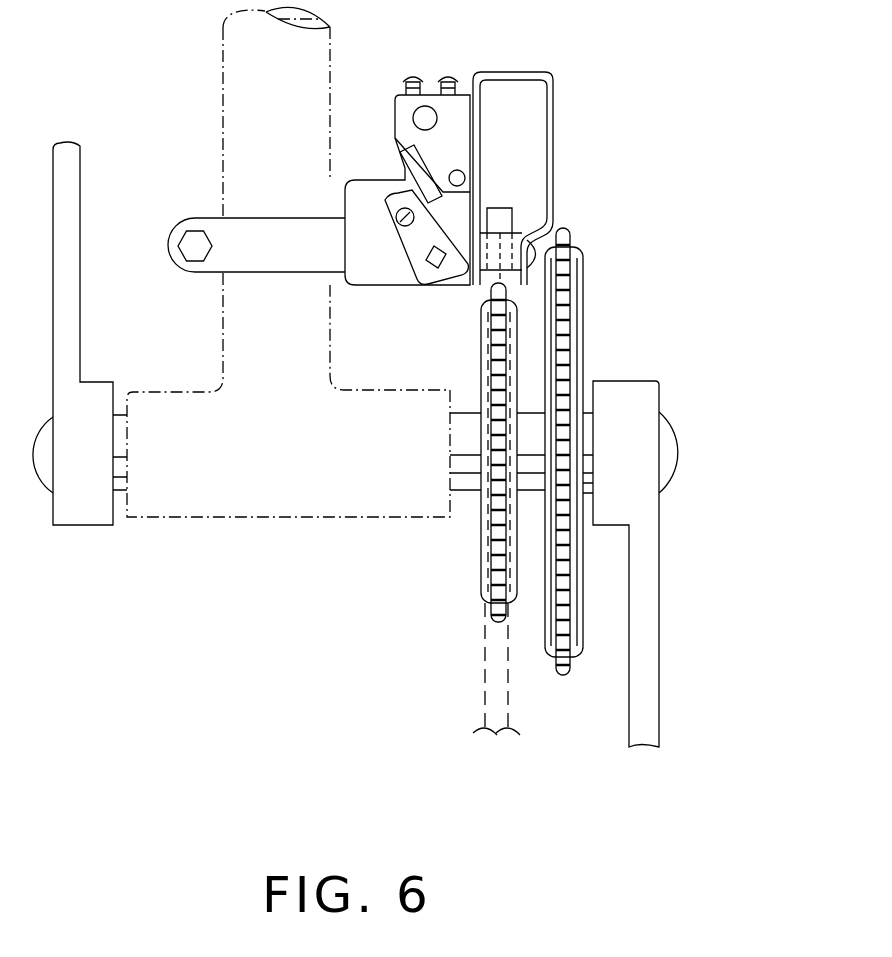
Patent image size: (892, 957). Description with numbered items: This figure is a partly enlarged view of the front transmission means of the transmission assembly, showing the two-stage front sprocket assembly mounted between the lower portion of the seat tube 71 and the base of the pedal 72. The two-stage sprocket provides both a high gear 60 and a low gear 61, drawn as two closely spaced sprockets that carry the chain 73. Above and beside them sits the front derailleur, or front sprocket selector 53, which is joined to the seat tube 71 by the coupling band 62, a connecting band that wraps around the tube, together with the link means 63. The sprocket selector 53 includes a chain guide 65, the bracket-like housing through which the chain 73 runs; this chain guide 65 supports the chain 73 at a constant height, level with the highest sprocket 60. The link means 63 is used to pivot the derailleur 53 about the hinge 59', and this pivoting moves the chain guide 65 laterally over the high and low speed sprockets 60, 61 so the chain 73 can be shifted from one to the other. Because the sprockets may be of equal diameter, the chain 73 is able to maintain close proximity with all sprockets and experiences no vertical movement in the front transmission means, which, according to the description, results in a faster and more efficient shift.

The front sprocket selector 53 is at (562, 143).
The hinge 59' is at (410, 267).
The high gear sprocket 60 is at (565, 320).
The low gear sprocket 61 is at (497, 565).
The coupling band 62 is at (220, 233).
The link means 63 is at (407, 160).
The chain guide 65 is at (547, 170).
The seat tube 71 is at (240, 81).
The pedal 72 is at (87, 510).
The chain 73 is at (485, 648).